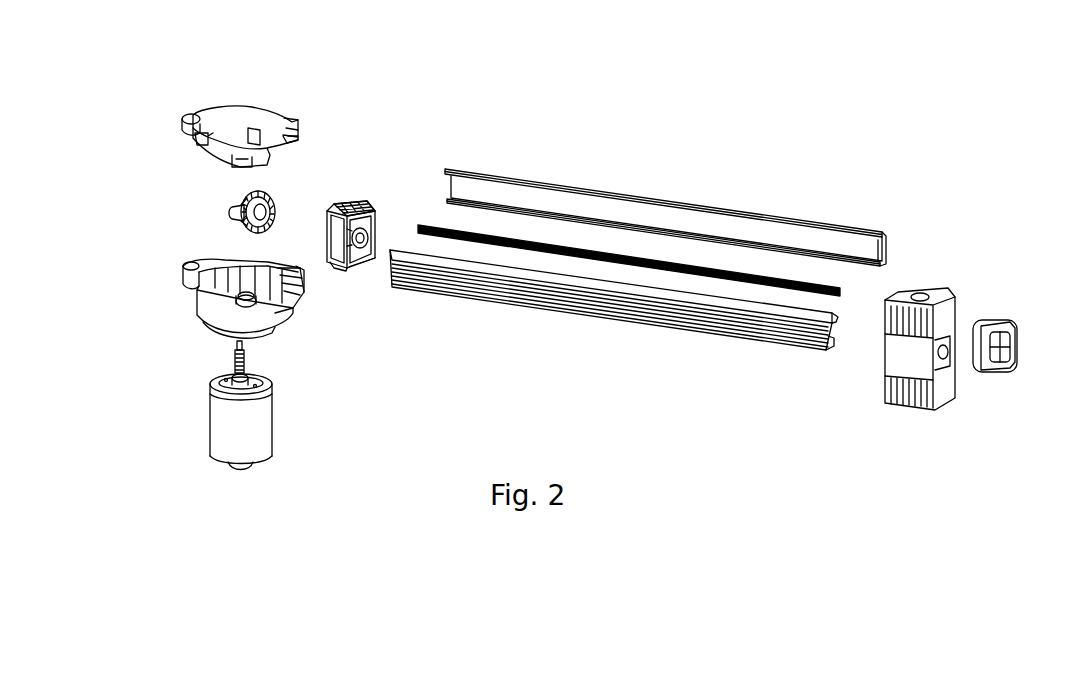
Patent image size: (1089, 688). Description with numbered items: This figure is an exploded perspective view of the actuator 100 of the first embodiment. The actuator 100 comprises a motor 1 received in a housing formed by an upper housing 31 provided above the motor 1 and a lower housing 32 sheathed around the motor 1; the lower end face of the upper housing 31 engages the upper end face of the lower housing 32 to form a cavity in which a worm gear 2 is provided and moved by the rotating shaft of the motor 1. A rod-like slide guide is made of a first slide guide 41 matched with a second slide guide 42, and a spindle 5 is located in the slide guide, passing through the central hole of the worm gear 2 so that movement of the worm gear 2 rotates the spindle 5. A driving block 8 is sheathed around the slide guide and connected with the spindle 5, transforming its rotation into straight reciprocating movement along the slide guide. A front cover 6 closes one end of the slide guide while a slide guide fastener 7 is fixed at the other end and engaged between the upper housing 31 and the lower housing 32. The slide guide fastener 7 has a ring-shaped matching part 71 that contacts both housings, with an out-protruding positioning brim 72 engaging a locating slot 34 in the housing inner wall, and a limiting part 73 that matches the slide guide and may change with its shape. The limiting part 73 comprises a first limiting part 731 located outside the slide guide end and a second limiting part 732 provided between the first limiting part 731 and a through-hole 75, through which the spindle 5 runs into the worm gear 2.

The actuator 100 is at (652, 50).
The motor 1 is at (272, 422).
The worm gear 2 is at (240, 203).
The spindle 5 is at (800, 283).
The front cover 6 is at (997, 318).
The slide guide fastener 7 is at (370, 196).
The driving block 8 is at (920, 293).
The upper housing 31 is at (262, 106).
The lower housing 32 is at (273, 328).
The locating slot 34 is at (296, 266).
The first slide guide 41 is at (568, 300).
The second slide guide 42 is at (620, 194).
The matching part 71 is at (340, 250).
The positioning brim 72 is at (338, 206).
The limiting part 73 is at (483, 346).
The through-hole 75 is at (367, 210).
The first limiting part 731 is at (372, 244).
The second limiting part 732 is at (350, 252).